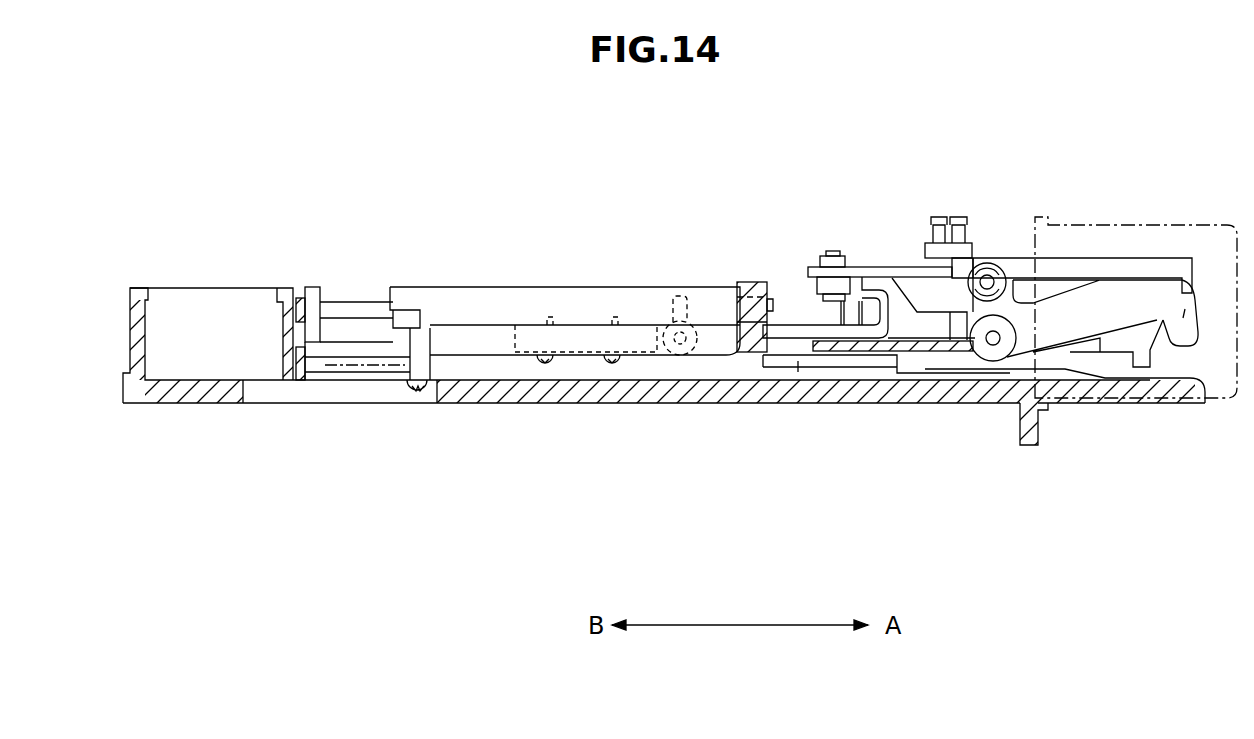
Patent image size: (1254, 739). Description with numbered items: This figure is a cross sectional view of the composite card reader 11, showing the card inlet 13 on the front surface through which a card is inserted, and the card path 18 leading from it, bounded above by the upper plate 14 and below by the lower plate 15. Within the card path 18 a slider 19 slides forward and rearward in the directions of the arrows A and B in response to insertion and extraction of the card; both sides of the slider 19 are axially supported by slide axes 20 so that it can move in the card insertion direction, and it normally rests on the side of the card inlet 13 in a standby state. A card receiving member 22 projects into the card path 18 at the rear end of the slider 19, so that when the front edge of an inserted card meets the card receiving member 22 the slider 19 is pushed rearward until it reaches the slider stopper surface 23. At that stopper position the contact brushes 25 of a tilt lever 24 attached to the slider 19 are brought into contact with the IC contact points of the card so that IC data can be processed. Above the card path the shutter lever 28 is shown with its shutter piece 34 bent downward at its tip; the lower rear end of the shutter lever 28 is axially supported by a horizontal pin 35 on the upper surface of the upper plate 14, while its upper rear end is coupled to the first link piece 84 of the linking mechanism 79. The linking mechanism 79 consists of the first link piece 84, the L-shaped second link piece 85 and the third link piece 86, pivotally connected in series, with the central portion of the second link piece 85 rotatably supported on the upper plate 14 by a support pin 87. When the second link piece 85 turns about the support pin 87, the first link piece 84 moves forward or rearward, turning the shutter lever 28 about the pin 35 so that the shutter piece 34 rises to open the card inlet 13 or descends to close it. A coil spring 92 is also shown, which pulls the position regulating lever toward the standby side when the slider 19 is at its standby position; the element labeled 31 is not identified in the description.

The composite card reader 11 is at (885, 199).
The card inlet 13 is at (1203, 360).
The upper plate 14 is at (862, 403).
The lower plate 15 is at (888, 402).
The card path 18 is at (927, 368).
The slider 19 is at (684, 290).
The slide axes 20 is at (362, 292).
The card receiving member 22 is at (450, 403).
The slider stopper surface 23 is at (312, 290).
The tilt lever 24 is at (537, 365).
The contact brushes 25 is at (612, 364).
The shutter lever 28 is at (1137, 278).
The housing 31 is at (175, 297).
The shutter piece 34 is at (1193, 310).
The pin 35 is at (993, 345).
The linking mechanism 79 is at (1007, 214).
The first link piece 84 is at (1070, 257).
The second link piece 85 is at (800, 325).
The third link piece 86 is at (786, 403).
The support pin 87 is at (862, 273).
The coil spring 92 is at (385, 395).